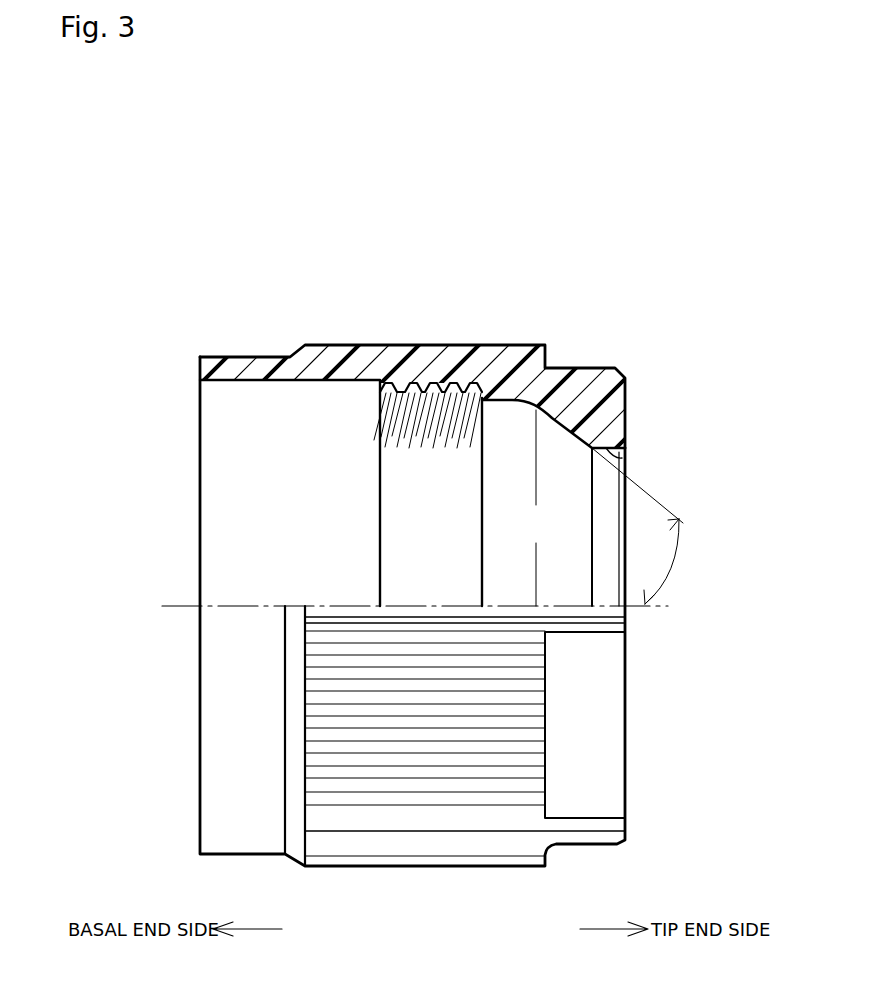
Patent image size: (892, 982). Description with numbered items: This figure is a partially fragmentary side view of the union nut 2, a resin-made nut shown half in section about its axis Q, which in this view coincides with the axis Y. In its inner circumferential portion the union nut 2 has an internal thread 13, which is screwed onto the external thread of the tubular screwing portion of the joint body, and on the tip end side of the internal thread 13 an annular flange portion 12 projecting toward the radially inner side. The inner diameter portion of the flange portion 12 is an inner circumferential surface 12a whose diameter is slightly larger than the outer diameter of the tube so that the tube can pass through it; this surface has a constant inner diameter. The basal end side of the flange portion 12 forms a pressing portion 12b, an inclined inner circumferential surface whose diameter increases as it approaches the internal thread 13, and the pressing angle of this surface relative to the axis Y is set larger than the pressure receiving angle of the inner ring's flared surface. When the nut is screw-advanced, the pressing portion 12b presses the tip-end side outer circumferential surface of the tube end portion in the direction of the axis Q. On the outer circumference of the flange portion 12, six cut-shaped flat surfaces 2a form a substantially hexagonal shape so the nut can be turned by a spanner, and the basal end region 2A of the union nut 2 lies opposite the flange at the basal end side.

The union nut 2 is at (514, 312).
The basal end portion of nut 2A is at (248, 372).
The cut-shaped flat surfaces 2a is at (600, 772).
The flange portion 12 is at (615, 403).
The inner circumferential surface 12a is at (623, 454).
The pressing portion 12b is at (583, 437).
The internal thread 13 is at (402, 422).
The axis Q is at (175, 606).
The axis Y is at (190, 606).